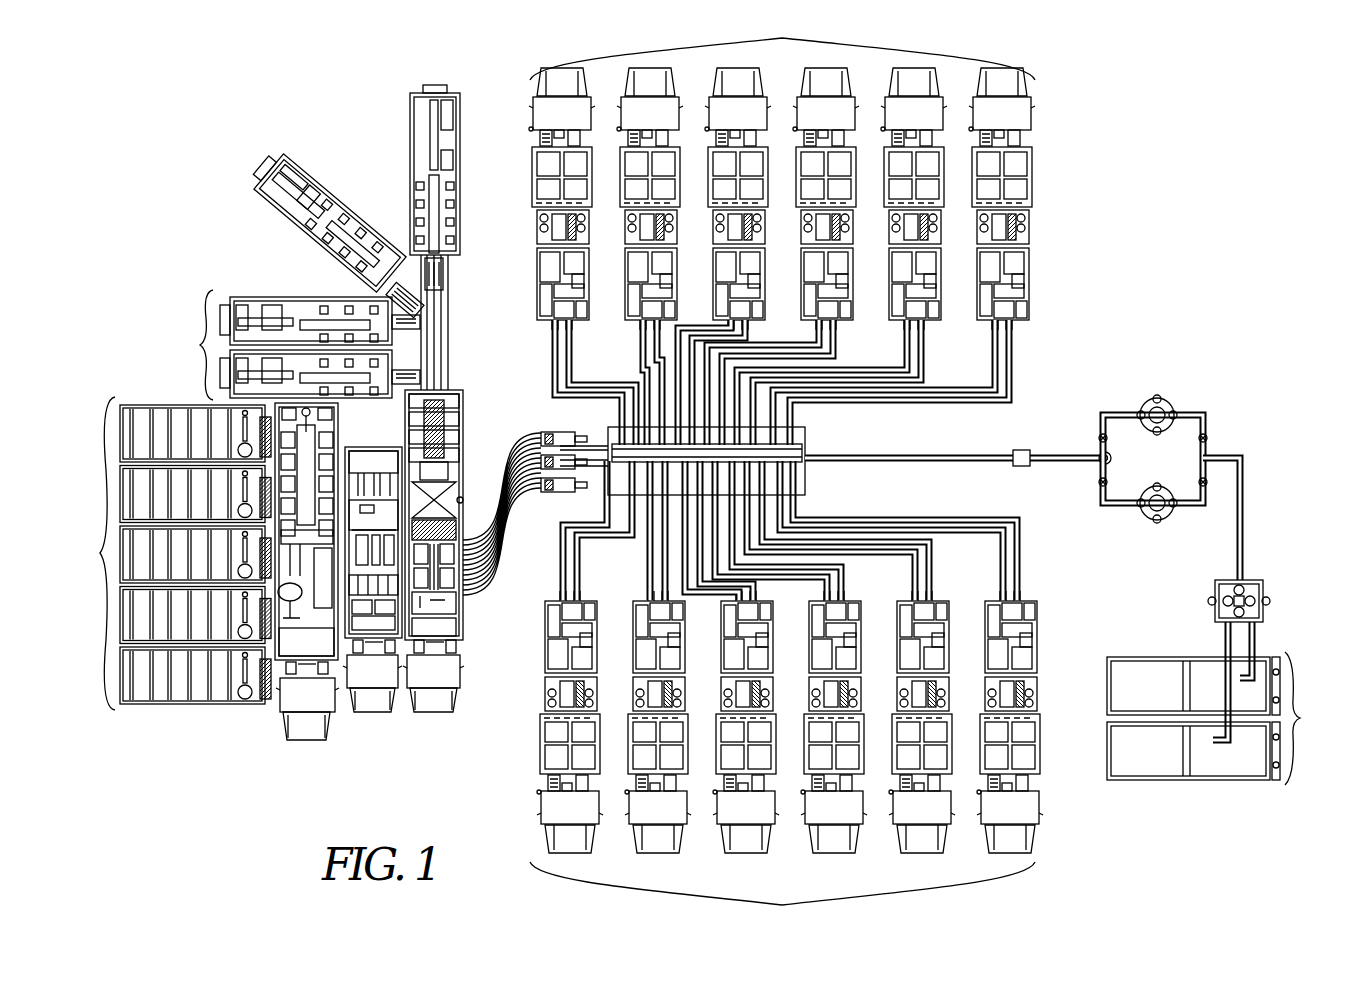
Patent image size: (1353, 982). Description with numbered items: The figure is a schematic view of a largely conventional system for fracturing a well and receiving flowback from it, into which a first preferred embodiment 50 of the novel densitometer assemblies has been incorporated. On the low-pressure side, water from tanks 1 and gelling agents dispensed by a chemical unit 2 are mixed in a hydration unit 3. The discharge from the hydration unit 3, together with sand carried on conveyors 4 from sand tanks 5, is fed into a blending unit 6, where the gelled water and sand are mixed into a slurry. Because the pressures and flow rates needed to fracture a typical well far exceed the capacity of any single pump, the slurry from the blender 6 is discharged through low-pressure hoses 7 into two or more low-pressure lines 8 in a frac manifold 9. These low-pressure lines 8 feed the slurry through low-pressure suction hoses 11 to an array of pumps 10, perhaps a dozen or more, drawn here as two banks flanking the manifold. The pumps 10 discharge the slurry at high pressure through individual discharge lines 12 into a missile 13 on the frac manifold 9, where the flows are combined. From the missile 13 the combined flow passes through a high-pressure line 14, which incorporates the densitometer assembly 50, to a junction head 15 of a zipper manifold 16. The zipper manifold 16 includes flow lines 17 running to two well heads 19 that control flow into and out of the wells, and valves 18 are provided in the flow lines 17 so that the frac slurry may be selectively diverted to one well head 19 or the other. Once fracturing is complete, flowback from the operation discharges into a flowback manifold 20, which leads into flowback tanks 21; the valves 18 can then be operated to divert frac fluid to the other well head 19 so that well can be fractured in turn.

The tanks 1 is at (101, 553).
The chemical unit 2 is at (372, 712).
The hydration unit 3 is at (310, 738).
The conveyors 4 is at (446, 330).
The sand tanks 5 is at (266, 170).
The blending unit 6 is at (428, 712).
The low-pressure hoses 7 is at (496, 452).
The low-pressure lines 8 is at (795, 476).
The frac manifold 9 is at (602, 432).
The pumps 10 is at (782, 40).
The suction hoses 11 is at (551, 372).
The discharge lines 12 is at (573, 350).
The missile 13 is at (796, 448).
The high-pressure line 14 is at (912, 462).
The junction head 15 is at (1100, 465).
The zipper manifold 16 is at (1135, 505).
The flow lines 17 is at (1130, 415).
The valves 18 is at (1108, 482).
The well heads 19 is at (1168, 405).
The flowback manifold 20 is at (1268, 602).
The flowback tanks 21 is at (1223, 718).
The densitometer assembly 50 is at (1029, 452).